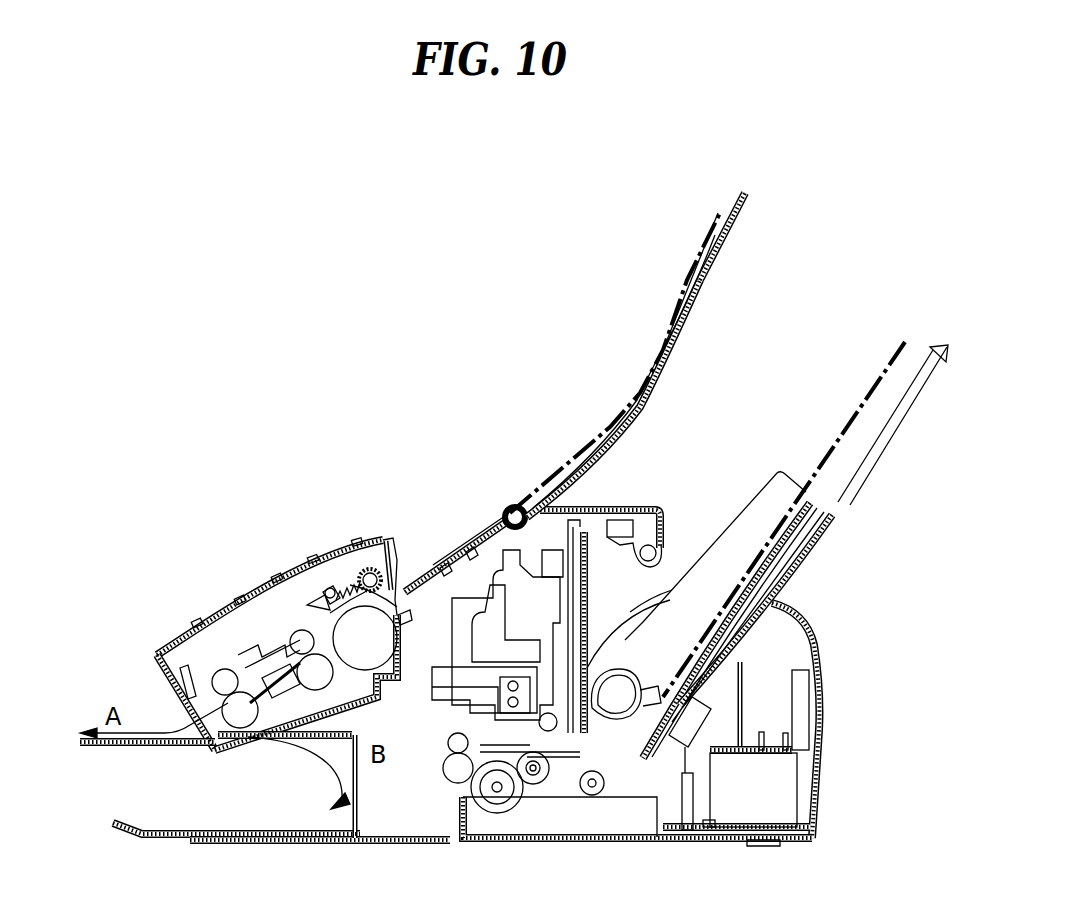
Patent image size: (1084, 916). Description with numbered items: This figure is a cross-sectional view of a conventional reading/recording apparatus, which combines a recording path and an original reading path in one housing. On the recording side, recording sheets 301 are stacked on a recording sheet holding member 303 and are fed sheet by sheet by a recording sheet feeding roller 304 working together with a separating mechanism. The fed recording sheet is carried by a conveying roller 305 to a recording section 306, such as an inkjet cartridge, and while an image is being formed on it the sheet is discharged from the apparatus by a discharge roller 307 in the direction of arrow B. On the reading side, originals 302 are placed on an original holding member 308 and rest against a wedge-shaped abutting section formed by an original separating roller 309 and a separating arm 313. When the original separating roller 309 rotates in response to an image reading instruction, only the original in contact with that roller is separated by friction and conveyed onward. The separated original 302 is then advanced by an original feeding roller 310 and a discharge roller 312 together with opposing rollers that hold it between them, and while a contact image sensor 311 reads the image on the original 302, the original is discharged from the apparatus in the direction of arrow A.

The recording sheet 301 is at (827, 460).
The original 302 is at (550, 478).
The recording sheet holding member 303 is at (860, 463).
The recording sheet feeding roller 304 is at (773, 600).
The conveying roller 305 is at (533, 777).
The recording section 306 is at (488, 713).
The discharge roller 307 is at (443, 768).
The original holding member 308 is at (707, 290).
The original separating roller 309 is at (355, 657).
The original feeding roller 310 is at (317, 677).
The contact image sensor 311 is at (272, 695).
The discharge roller 312 is at (225, 717).
The separating arm 313 is at (350, 617).